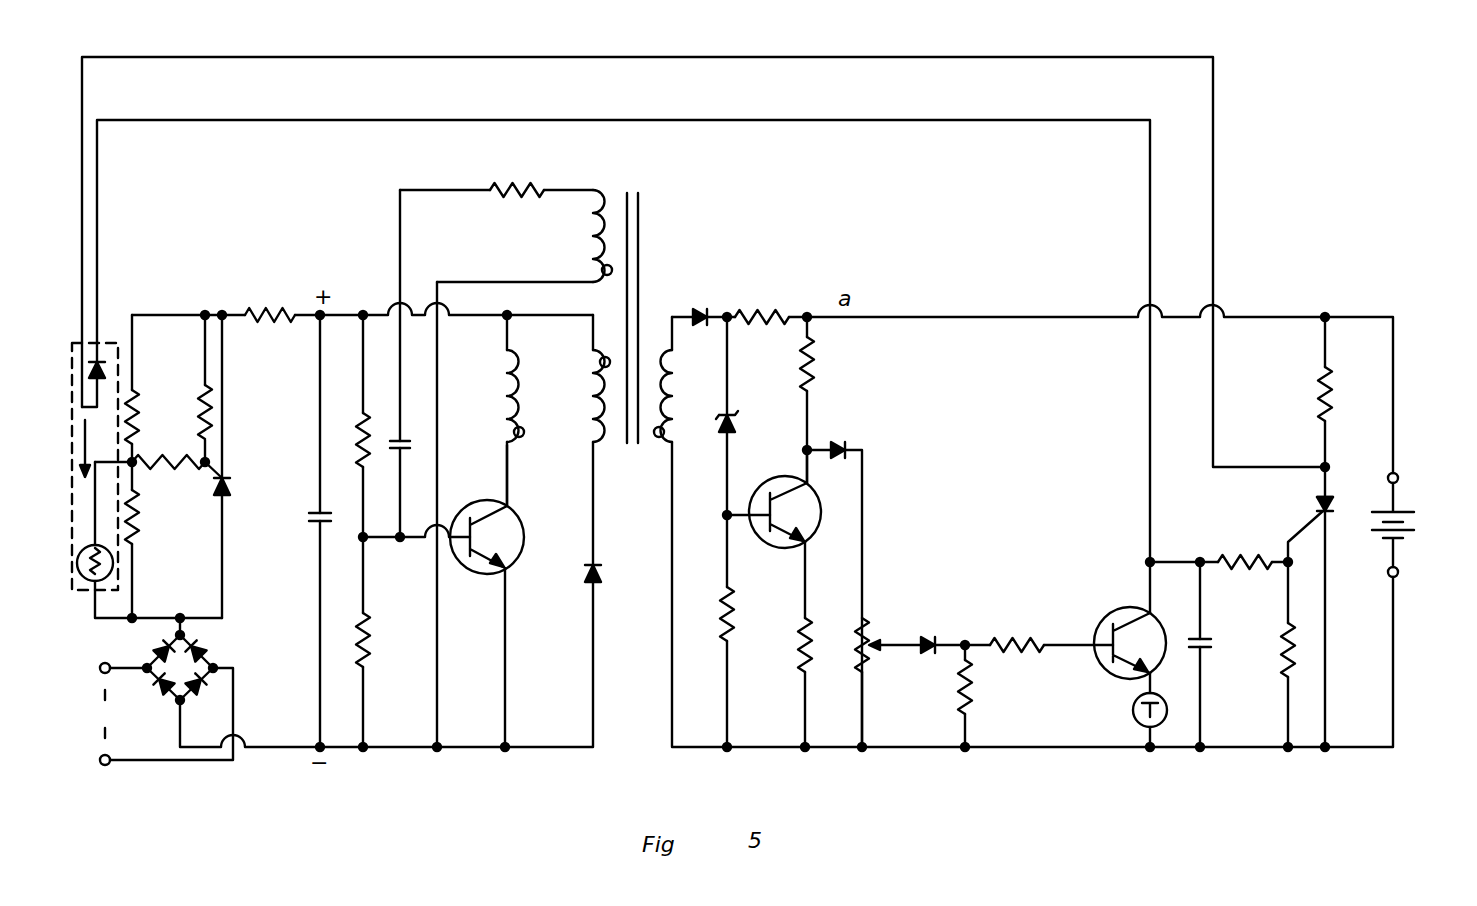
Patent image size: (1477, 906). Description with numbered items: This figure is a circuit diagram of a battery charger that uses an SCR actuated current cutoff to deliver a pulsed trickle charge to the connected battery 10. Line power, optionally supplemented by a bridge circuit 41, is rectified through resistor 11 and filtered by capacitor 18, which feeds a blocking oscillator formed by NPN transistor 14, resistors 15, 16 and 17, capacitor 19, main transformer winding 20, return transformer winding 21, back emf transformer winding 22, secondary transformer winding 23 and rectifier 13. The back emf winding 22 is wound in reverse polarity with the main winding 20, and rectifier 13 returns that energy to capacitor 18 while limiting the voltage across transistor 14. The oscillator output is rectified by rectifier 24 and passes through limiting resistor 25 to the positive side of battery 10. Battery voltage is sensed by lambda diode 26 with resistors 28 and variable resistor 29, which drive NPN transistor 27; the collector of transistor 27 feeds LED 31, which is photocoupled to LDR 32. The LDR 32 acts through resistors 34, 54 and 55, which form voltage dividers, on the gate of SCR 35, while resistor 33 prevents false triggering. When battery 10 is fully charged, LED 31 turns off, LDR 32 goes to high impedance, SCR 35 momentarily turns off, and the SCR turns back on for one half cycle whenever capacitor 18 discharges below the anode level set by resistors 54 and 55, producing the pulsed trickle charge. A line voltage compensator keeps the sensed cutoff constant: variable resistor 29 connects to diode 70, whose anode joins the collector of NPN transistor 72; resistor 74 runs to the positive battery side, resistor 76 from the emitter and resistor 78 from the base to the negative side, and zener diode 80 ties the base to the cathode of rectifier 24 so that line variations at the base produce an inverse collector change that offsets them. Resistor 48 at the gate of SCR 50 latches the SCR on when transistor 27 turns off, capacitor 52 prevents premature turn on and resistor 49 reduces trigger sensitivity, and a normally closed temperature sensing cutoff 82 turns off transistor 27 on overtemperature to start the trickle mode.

The battery 10 is at (1418, 522).
The resistor 11 is at (270, 302).
The rectifier 13 is at (603, 573).
The NPN transistor 14 is at (480, 576).
The resistor 15 is at (350, 412).
The resistor 16 is at (352, 618).
The resistor 17 is at (510, 182).
The filtering capacitor 18 is at (306, 522).
The capacitor 19 is at (408, 434).
The main transformer winding 20 is at (505, 415).
The return transformer winding 21 is at (590, 243).
The back emf transformer winding 22 is at (590, 440).
The secondary transformer winding 23 is at (680, 364).
The rectifier 24 is at (700, 308).
The limiting resistor 25 is at (780, 304).
The lambda diode 26 is at (928, 632).
The NPN transistor 27 is at (1100, 622).
The resistor 28 is at (1010, 636).
The variable resistor 29 is at (870, 620).
The LED 31 is at (106, 346).
The LDR 32 is at (86, 584).
The resistor 33 is at (197, 425).
The resistor 34 is at (172, 470).
The SCR 35 is at (234, 494).
The bridge circuit 41 is at (208, 642).
The resistor 48 is at (1240, 550).
The resistor 49 is at (1278, 634).
The SCR 50 is at (1334, 492).
The capacitor 52 is at (1206, 650).
The resistor 54 is at (140, 530).
The resistor 55 is at (139, 402).
The diode 70 is at (838, 436).
The NPN transistor 72 is at (778, 550).
The resistor 74 is at (820, 352).
The resistor 76 is at (812, 622).
The resistor 78 is at (718, 628).
The zener diode 80 is at (737, 424).
The temperature sensing cutoff 82 is at (1132, 712).